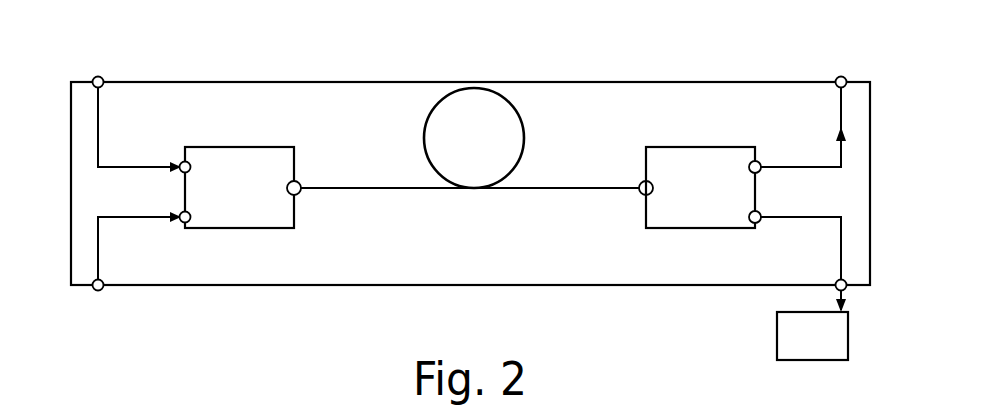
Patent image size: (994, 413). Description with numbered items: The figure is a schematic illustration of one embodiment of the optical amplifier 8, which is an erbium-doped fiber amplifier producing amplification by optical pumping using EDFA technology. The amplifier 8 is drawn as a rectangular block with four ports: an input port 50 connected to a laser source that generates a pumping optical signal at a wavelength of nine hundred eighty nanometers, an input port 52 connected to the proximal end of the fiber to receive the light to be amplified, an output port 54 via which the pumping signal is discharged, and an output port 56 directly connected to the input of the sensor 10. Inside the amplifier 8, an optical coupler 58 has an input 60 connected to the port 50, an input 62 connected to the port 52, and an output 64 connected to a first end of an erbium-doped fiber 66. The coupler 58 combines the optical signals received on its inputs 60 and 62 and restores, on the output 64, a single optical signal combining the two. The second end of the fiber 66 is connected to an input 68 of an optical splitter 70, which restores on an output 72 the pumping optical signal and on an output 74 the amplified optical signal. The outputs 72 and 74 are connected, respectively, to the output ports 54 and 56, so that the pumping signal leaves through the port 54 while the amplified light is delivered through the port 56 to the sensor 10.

The optical amplifier 8 is at (70, 78).
The sensor 10 is at (812, 336).
The input port 50 is at (99, 76).
The input port 52 is at (98, 291).
The output port 54 is at (842, 76).
The output port 56 is at (846, 290).
The optical coupler 58 is at (240, 138).
The input 60 is at (181, 163).
The input 62 is at (184, 223).
The output 64 is at (299, 182).
The erbium-doped fiber 66 is at (530, 112).
The input 68 is at (644, 182).
The optical splitter 70 is at (700, 138).
The output 72 is at (760, 163).
The output 74 is at (757, 224).